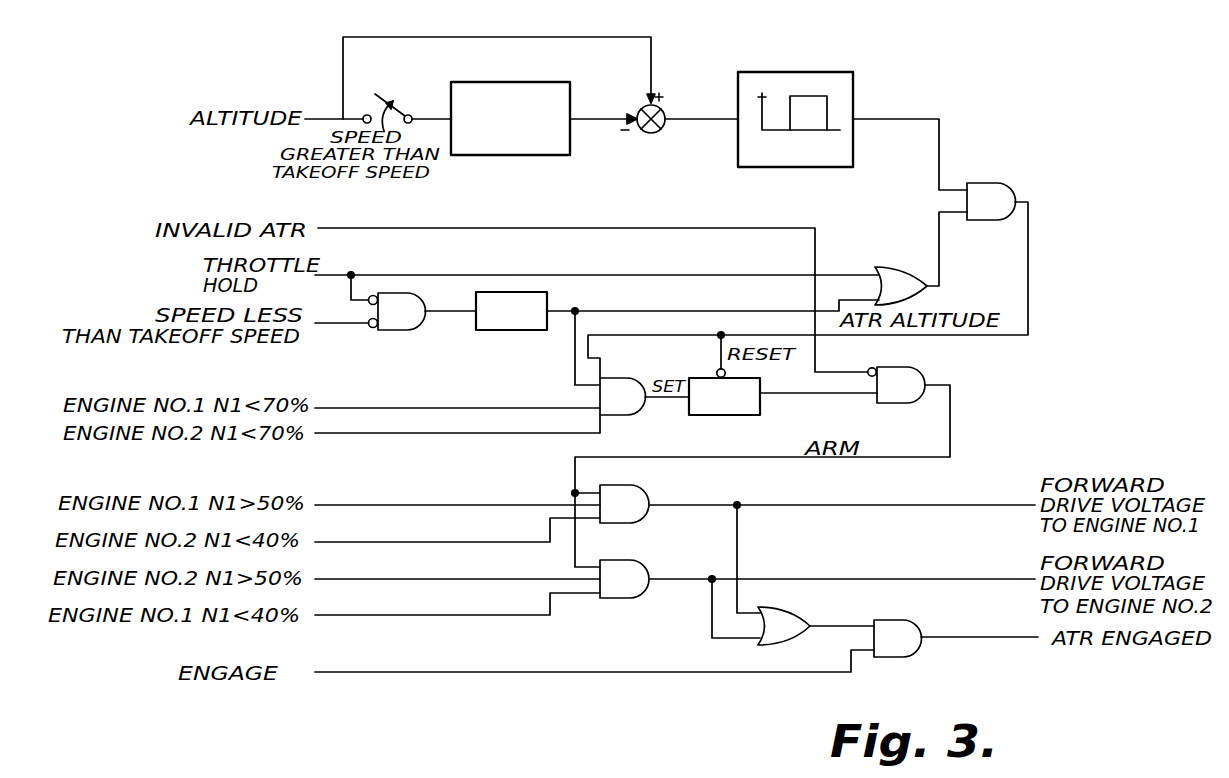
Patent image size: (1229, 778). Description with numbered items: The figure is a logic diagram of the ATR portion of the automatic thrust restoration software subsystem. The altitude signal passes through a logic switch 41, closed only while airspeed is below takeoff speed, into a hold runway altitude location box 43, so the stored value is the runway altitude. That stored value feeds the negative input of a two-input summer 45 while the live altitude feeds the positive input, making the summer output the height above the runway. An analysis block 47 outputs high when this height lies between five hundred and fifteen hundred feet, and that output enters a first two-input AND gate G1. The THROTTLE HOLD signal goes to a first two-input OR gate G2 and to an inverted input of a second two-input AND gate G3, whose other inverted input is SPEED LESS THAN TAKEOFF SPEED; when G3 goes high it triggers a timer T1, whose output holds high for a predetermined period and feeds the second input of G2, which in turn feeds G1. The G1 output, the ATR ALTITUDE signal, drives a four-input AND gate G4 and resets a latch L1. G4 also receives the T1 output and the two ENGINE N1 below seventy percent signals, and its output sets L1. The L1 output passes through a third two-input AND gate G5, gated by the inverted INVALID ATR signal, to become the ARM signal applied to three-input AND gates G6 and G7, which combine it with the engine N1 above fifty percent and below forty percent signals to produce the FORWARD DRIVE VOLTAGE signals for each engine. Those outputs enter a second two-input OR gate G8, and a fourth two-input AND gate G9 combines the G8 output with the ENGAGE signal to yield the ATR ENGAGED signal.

The logic switch 41 is at (407, 106).
The hold runway altitude location box 43 is at (570, 92).
The two-input summer 45 is at (664, 111).
The analysis block 47 is at (853, 80).
The first two-input AND gate G1 is at (997, 183).
The first two-input OR gate G2 is at (902, 255).
The second two-input AND gate G3 is at (405, 293).
The timer T1 is at (547, 300).
The four-input AND gate G4 is at (625, 378).
The latch L1 is at (760, 386).
The third two-input AND gate G5 is at (905, 367).
The three-input AND gate G6 is at (630, 485).
The three-input AND gate G7 is at (630, 560).
The second two-input OR gate G8 is at (792, 607).
The fourth two-input AND gate G9 is at (900, 620).